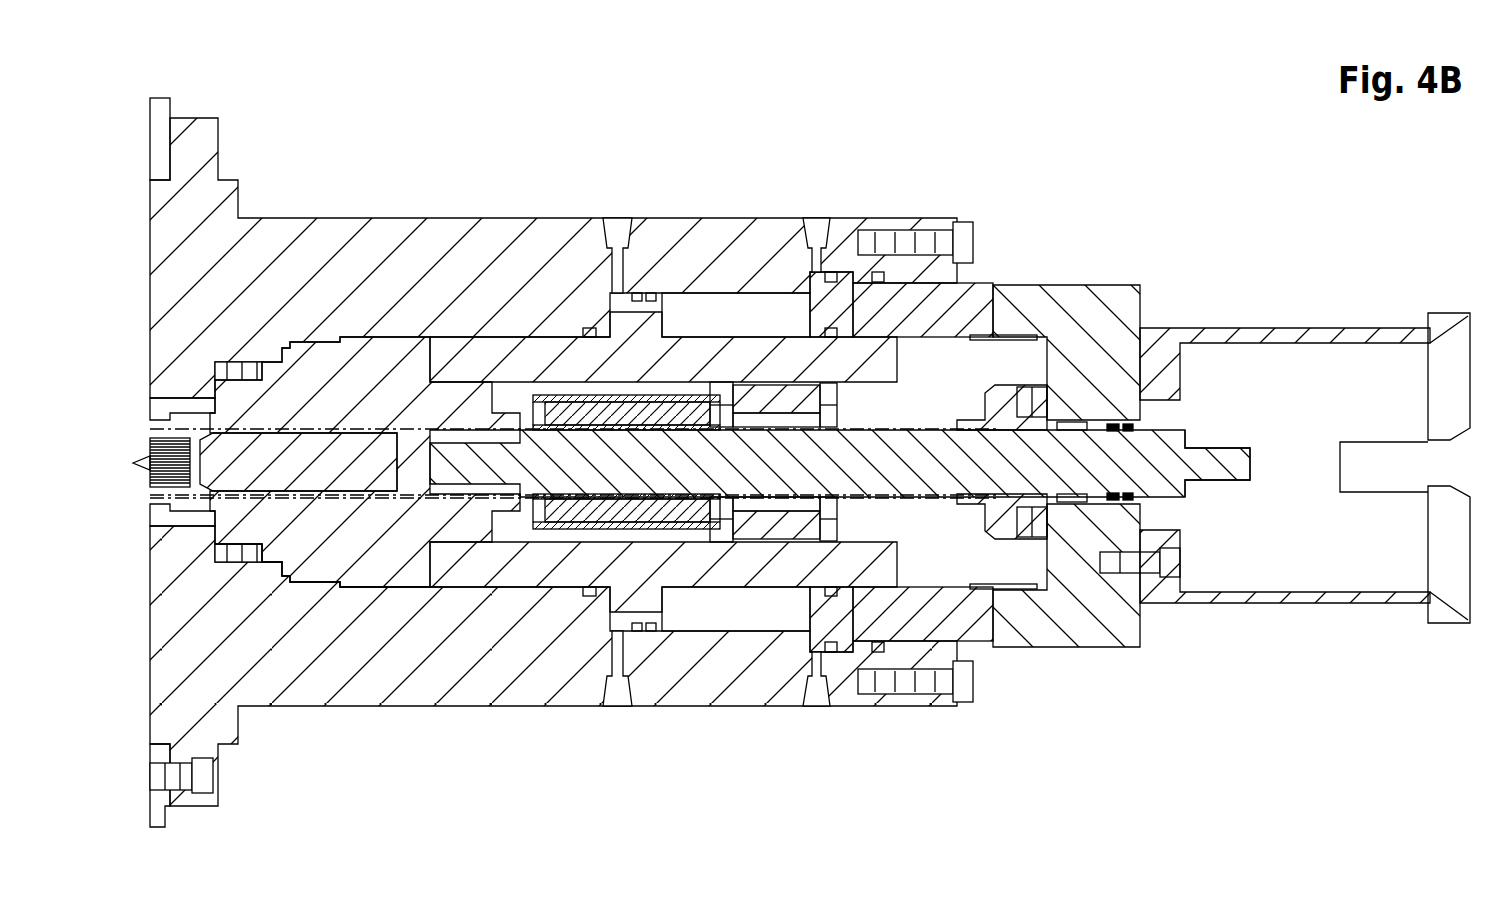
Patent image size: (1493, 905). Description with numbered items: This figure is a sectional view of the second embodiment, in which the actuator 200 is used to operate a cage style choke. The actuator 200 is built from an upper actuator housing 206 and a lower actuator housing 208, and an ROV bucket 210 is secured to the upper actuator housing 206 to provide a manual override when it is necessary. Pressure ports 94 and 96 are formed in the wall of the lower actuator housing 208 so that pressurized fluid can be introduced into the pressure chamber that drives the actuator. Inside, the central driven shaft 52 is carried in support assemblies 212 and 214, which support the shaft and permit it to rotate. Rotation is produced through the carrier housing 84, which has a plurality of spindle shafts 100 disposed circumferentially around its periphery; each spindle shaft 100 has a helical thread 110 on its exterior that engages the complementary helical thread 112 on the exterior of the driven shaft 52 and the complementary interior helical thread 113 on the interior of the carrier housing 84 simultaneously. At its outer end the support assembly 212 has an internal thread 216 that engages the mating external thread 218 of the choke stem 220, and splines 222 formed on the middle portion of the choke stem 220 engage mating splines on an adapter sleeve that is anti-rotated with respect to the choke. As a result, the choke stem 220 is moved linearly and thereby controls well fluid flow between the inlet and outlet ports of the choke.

The actuator 200 is at (374, 112).
The lower actuator housing 208 is at (497, 218).
The upper actuator housing 206 is at (1103, 285).
The ROV bucket 210 is at (1353, 328).
The support assembly 212 is at (1163, 485).
The driven shaft 52 is at (905, 455).
The internal thread 216 is at (322, 458).
The support assembly 214 is at (363, 570).
The choke stem 220 is at (408, 480).
The external thread 218 is at (263, 412).
The splines 222 is at (170, 490).
The interior helical thread 113 is at (680, 397).
The helical thread 112 is at (687, 400).
The carrier housing 84 is at (722, 385).
The spindle shafts 100 is at (650, 525).
The helical thread 110 is at (685, 503).
The pressure port 96 is at (610, 707).
The pressure port 94 is at (808, 707).